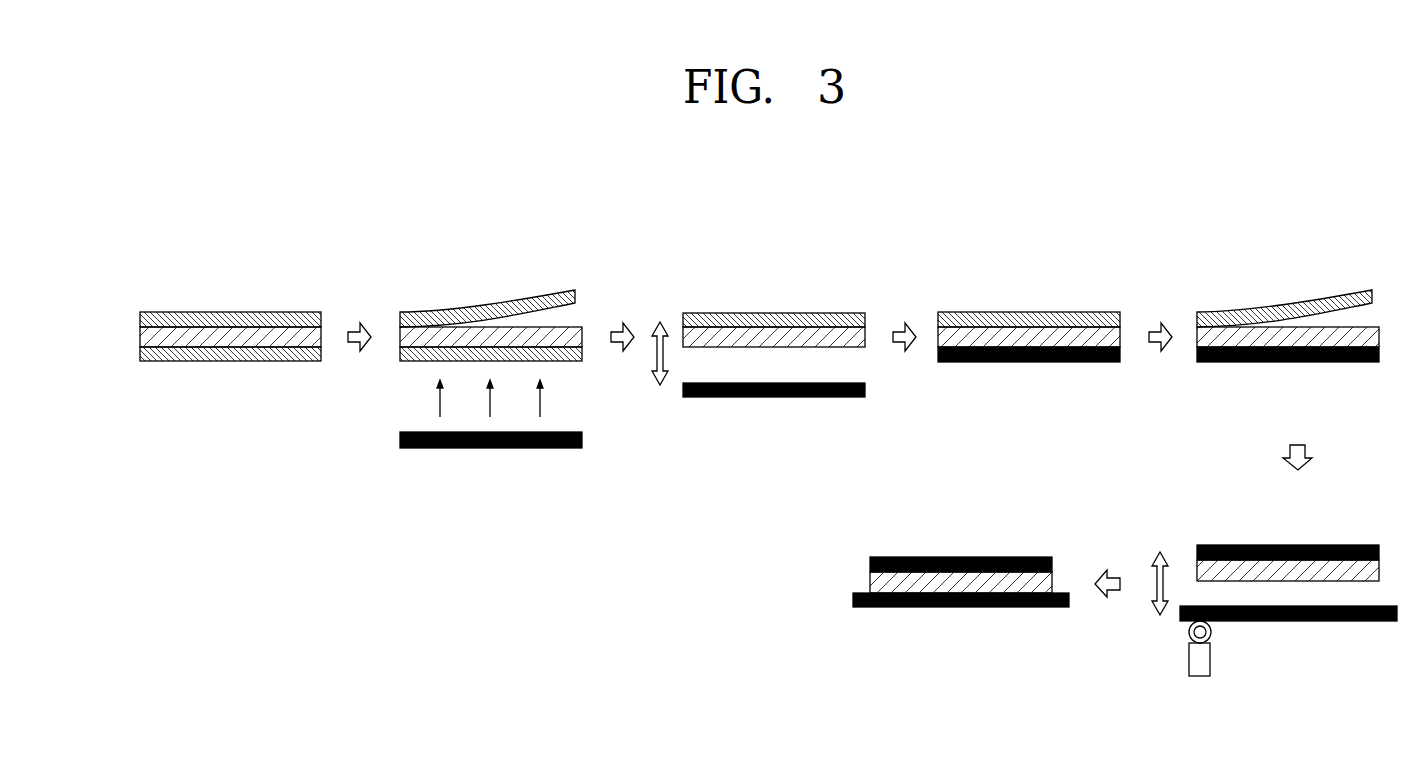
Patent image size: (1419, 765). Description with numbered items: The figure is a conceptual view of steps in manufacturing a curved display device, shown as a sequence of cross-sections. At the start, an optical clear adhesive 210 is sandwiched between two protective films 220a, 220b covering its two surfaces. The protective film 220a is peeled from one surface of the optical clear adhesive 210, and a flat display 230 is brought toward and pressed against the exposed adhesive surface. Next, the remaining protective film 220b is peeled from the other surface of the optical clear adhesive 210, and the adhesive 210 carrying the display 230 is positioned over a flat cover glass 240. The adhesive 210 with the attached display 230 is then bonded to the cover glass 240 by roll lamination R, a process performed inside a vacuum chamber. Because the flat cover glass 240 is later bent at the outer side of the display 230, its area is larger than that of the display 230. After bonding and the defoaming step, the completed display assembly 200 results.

The display assembly 200 is at (845, 561).
The optical clear adhesive 210 is at (243, 332).
The protective film 220a is at (188, 312).
The protective film 220b is at (185, 361).
The flat display 230 is at (487, 448).
The flat cover glass 240 is at (1292, 621).
The roll lamination R is at (1202, 670).